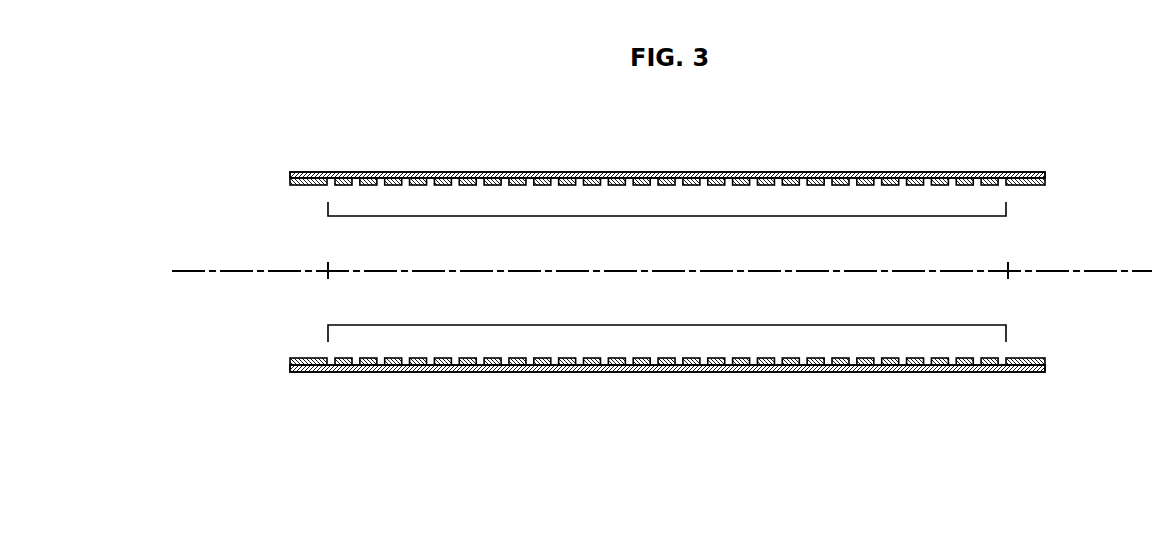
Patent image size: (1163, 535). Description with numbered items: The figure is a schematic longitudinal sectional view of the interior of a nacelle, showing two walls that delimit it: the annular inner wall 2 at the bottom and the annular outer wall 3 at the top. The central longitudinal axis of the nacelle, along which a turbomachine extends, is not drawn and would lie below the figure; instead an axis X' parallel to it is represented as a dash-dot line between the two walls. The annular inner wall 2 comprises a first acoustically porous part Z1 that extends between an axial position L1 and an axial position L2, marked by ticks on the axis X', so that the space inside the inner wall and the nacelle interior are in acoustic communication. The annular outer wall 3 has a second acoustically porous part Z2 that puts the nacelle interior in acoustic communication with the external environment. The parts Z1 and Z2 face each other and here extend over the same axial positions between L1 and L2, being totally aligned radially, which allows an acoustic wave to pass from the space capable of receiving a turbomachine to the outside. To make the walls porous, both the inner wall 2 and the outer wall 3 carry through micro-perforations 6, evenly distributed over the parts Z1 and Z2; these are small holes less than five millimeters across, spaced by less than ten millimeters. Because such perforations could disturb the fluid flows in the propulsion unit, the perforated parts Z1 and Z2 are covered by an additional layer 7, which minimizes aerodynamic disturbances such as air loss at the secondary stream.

The annular inner wall 2 is at (254, 364).
The annular outer wall 3 is at (254, 178).
The micro-perforations 6 is at (385, 185).
The additional layer 7 is at (670, 172).
The axis X' is at (662, 235).
The axial position L1 is at (329, 259).
The axial position L2 is at (1009, 259).
The first acoustically porous part Z1 is at (668, 325).
The second acoustically porous part Z2 is at (670, 217).